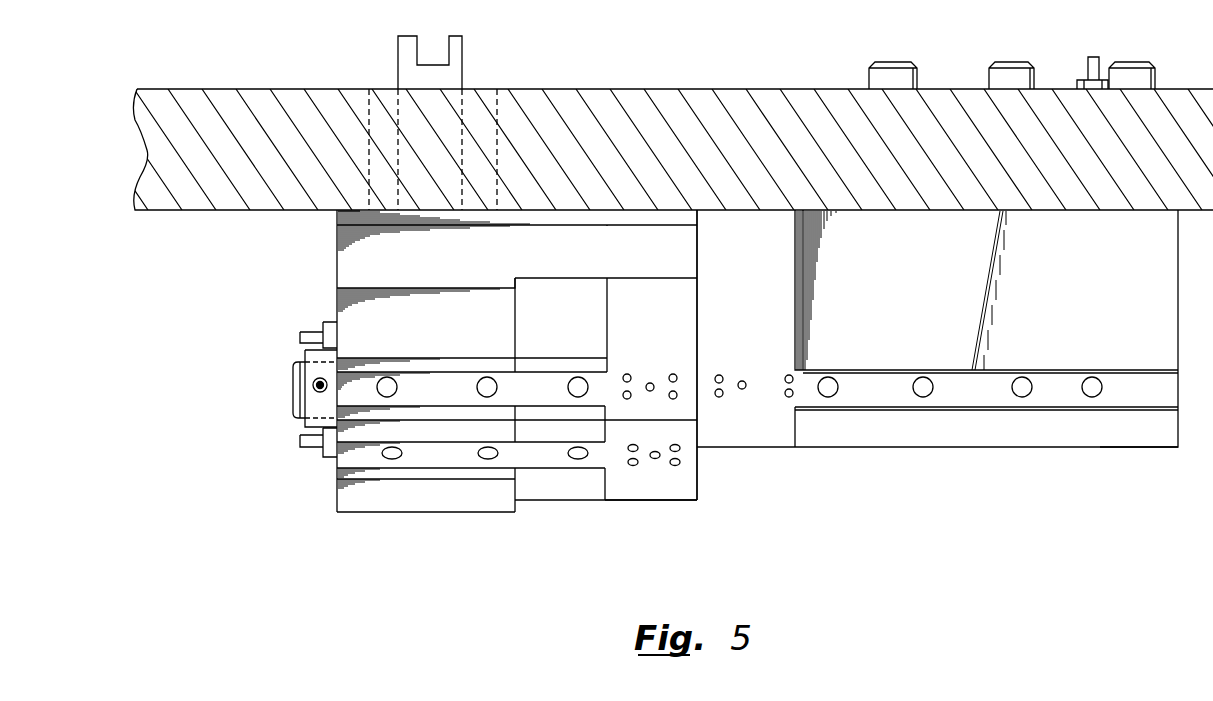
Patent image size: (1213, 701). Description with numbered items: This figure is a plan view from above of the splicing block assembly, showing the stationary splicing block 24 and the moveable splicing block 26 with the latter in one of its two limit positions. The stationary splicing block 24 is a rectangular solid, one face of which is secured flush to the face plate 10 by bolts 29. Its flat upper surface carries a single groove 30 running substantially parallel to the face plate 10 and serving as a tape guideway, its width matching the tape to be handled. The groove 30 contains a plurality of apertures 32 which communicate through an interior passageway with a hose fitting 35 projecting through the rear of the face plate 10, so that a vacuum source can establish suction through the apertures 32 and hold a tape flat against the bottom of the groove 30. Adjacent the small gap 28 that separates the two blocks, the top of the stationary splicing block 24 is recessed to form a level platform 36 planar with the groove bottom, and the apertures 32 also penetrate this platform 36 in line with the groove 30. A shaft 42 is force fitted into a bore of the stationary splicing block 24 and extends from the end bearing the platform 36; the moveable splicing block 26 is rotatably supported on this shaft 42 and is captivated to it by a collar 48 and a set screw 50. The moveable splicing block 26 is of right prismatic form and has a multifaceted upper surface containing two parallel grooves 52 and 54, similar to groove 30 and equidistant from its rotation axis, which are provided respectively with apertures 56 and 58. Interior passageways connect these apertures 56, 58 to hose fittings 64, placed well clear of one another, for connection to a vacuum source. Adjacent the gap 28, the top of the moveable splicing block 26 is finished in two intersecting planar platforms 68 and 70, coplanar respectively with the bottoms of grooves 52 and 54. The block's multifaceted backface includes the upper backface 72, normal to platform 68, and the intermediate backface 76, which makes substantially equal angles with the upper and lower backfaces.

The face plate 10 is at (200, 203).
The bolts 29 is at (997, 62).
The hose fitting 35 is at (1083, 80).
The intermediate backface 76 is at (338, 217).
The upper backface 72 is at (343, 260).
The groove 54 is at (552, 383).
The platform 70 is at (632, 327).
The apertures 58 is at (398, 387).
The groove 52 is at (558, 460).
The apertures 56 is at (404, 453).
The platform 68 is at (637, 487).
The moveable splicing block 26 is at (402, 512).
The hose fittings 64 is at (318, 324).
The shaft 42 is at (305, 365).
The set screw 50 is at (313, 385).
The collar 48 is at (298, 405).
The gap 28 is at (697, 447).
The platform 36 is at (753, 299).
The apertures 32 is at (789, 393).
The stationary splicing block 24 is at (1000, 447).
The groove 30 is at (1122, 390).